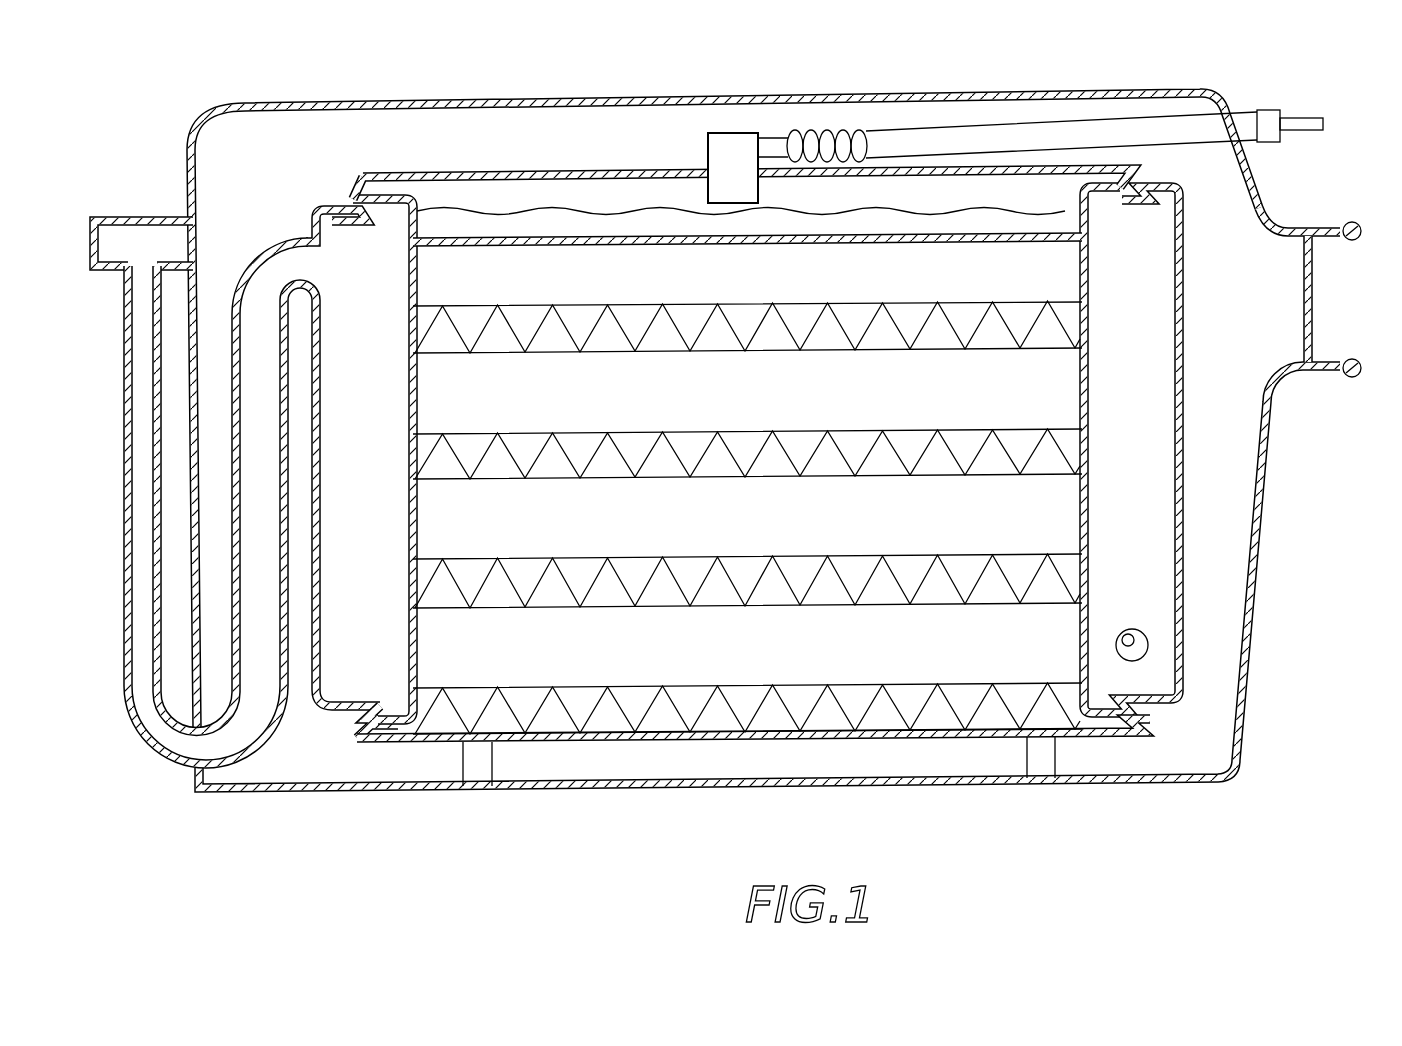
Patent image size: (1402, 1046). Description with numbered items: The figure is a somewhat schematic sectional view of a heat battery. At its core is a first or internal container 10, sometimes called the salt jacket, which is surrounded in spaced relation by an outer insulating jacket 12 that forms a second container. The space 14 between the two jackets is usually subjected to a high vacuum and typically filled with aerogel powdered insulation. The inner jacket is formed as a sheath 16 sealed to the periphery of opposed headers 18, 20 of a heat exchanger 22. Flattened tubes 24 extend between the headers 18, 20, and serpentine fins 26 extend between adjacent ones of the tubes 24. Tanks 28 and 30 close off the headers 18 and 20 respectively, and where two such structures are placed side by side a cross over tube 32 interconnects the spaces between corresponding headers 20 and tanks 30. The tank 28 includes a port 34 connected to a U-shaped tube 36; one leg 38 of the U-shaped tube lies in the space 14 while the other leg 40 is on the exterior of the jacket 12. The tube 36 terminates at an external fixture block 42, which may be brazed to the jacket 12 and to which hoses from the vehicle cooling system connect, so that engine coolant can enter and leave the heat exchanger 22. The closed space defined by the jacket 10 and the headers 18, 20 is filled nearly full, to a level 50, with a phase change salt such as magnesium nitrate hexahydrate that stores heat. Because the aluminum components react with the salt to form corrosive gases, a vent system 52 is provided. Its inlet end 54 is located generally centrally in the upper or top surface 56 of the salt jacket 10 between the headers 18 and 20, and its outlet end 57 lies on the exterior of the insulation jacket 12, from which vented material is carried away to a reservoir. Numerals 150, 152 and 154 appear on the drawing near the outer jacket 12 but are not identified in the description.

The internal container 10 is at (600, 166).
The insulating jacket 12 is at (962, 90).
The space 14 is at (275, 166).
The sheath 16 is at (673, 742).
The header 18 is at (420, 638).
The header 20 is at (1080, 628).
The heat exchanger 22 is at (645, 640).
The flattened tubes 24 is at (884, 284).
The serpentine fins 26 is at (648, 338).
The tank 28 is at (312, 705).
The tank 30 is at (1184, 473).
The cross over tube 32 is at (1138, 633).
The port 34 is at (314, 250).
The U-shaped tube 36 is at (288, 344).
The leg 38 is at (287, 434).
The leg 40 is at (124, 494).
The external fixture block 42 is at (170, 216).
The level 50 is at (523, 210).
The vent system 52 is at (884, 128).
The inlet end 54 is at (732, 206).
The top surface 56 is at (630, 176).
The outlet end 57 is at (1306, 108).
The housing flange 150 is at (1262, 214).
The mounting bracket 152 is at (1313, 297).
The mounting pins 154 is at (1361, 234).